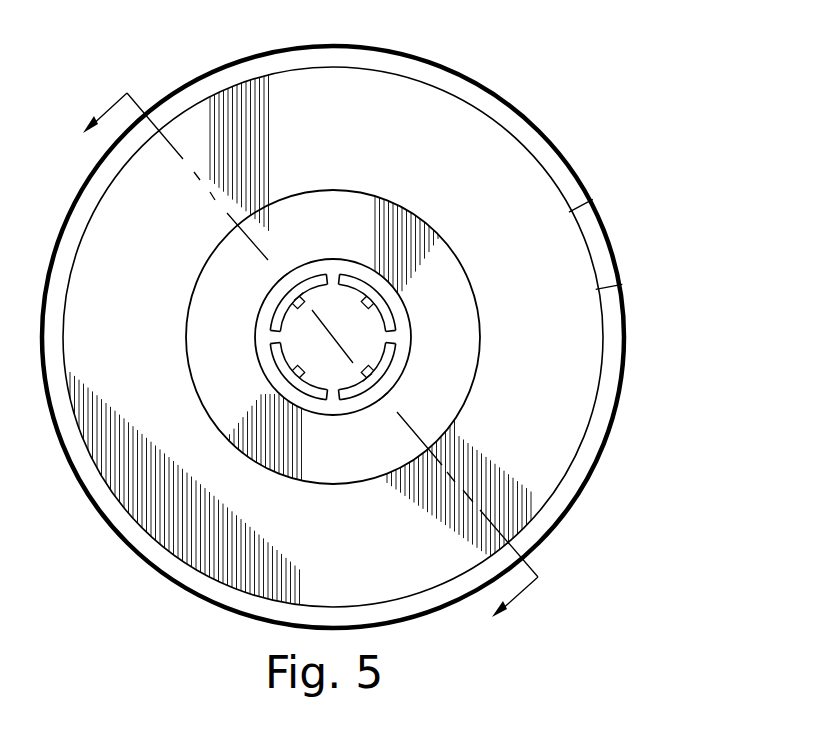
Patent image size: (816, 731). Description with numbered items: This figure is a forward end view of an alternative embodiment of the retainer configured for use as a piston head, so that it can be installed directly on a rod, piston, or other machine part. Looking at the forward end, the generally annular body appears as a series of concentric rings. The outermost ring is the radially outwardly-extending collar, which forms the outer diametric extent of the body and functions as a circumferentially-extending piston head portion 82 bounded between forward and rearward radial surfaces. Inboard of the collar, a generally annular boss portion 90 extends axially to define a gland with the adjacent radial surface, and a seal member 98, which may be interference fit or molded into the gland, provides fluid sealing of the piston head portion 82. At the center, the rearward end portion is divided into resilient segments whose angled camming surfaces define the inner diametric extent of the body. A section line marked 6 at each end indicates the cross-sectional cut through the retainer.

The seal member 98 is at (412, 136).
The boss portion 90 is at (430, 227).
The piston head portion 82 is at (574, 208).
The section line 6- 6 is at (302, 368).